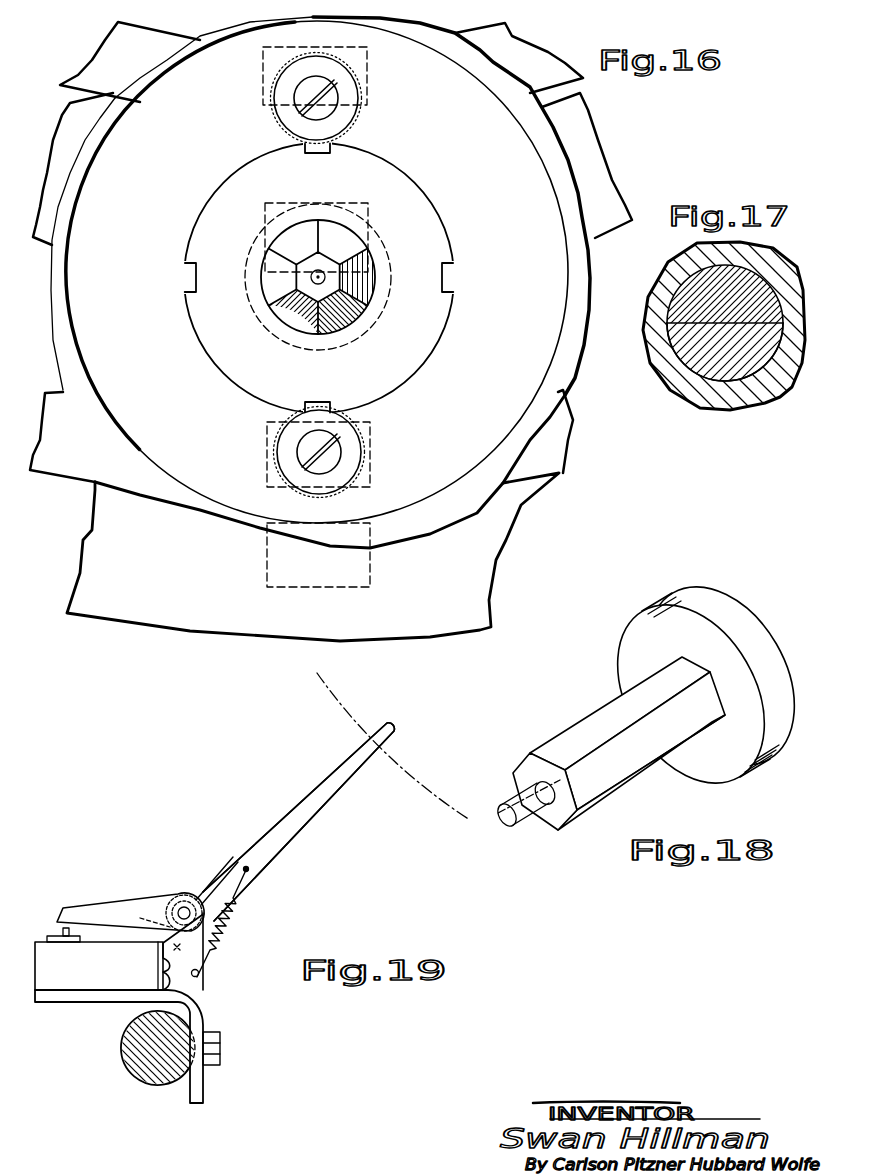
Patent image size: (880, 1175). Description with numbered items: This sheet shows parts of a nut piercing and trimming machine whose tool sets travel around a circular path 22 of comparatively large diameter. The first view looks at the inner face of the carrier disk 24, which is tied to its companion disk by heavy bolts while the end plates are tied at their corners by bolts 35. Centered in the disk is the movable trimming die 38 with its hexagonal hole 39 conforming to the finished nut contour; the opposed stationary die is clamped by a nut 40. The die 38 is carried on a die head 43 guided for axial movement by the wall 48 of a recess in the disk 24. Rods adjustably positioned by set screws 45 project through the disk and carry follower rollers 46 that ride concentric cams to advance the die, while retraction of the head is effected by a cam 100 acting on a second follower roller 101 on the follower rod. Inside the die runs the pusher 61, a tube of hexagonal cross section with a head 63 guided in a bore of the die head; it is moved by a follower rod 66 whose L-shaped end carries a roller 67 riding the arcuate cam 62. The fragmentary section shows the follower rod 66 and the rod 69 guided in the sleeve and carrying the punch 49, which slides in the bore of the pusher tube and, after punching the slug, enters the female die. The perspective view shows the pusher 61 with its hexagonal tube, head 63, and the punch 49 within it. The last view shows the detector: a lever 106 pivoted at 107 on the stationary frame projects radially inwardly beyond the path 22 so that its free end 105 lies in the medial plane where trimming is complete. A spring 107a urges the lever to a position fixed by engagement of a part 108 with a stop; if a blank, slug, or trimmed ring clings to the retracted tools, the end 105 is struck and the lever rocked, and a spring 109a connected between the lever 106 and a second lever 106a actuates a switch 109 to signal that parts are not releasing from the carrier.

In FIG. 19, the circular path 22 is at (410, 780).
In FIG. 16, the carrier disk 24 is at (68, 367).
In FIG. 17, the carrier disk 24 is at (768, 392).
In FIG. 19, the bolt 35 is at (142, 1075).
In FIG. 16, the trimming die 38 is at (280, 315).
In FIG. 16, the hexagonal hole 39 is at (300, 278).
In FIG. 16, the nut 40 is at (203, 225).
In FIG. 16, the die head 43 is at (538, 368).
In FIG. 16, the set screw 45 is at (358, 98).
In FIG. 16, the follower roller 46 is at (368, 70).
In FIG. 16, the wall of recess / cam 48 is at (533, 57).
In FIG. 18, the punch 49 is at (527, 820).
In FIG. 18, the pusher 61 is at (532, 763).
In FIG. 16, the cam 62 is at (596, 163).
In FIG. 18, the head 63 is at (630, 653).
In FIG. 17, the follower rod 66 is at (703, 273).
In FIG. 16, the roller 67 is at (367, 222).
In FIG. 17, the rod 69 is at (730, 377).
In FIG. 16, the cam 100 is at (538, 505).
In FIG. 16, the second follower roller 101 is at (373, 564).
In FIG. 19, the detector element 105 is at (355, 767).
In FIG. 19, the lever 106 is at (262, 843).
In FIG. 19, the second lever 106a is at (107, 910).
In FIG. 19, the pivot 107 is at (185, 907).
In FIG. 19, the spring 107a is at (237, 907).
In FIG. 19, the stop-engaging part 108 is at (123, 951).
In FIG. 19, the switch 109 is at (85, 980).
In FIG. 19, the spring 109a is at (217, 878).